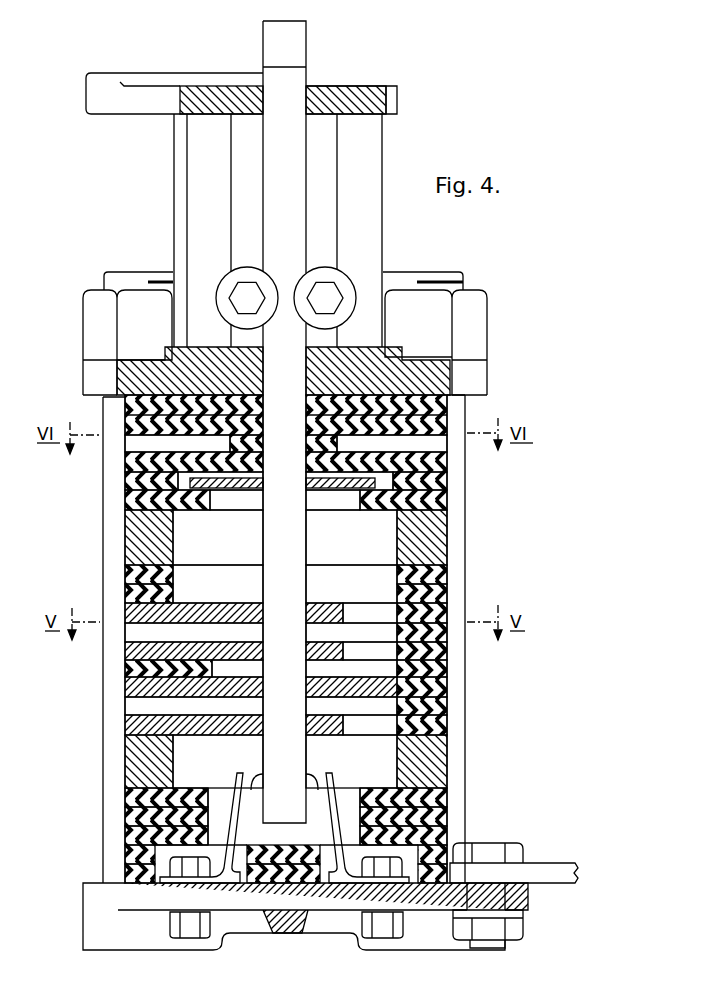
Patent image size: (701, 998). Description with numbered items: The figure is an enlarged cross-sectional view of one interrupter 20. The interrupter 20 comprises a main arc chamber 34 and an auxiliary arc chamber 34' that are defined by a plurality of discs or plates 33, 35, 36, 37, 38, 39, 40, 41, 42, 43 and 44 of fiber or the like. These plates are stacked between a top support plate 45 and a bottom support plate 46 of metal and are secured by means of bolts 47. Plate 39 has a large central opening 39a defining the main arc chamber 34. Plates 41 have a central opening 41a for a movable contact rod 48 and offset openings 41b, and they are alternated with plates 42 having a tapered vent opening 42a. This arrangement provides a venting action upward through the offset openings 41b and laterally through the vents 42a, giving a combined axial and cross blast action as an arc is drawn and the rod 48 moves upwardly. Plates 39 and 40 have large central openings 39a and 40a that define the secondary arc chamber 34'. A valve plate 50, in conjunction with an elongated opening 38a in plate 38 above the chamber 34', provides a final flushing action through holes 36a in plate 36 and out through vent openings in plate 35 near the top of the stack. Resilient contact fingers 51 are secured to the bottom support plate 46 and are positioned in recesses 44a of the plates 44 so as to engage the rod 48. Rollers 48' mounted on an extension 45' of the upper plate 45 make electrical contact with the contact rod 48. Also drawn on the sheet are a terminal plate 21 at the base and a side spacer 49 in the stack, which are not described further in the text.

The interrupter 20 is at (46, 668).
The terminal plate 21 is at (548, 866).
The plate 33 is at (450, 405).
The main arc chamber 34 is at (351, 761).
The auxiliary arc chamber 34' is at (351, 537).
The plate 35 is at (340, 443).
The plate 36 is at (125, 466).
The holes 36a is at (214, 456).
The plate 37 is at (450, 492).
The plate 38 is at (125, 502).
The elongated opening 38a is at (212, 511).
The plate 39 is at (450, 543).
The central opening 39a is at (178, 556).
The plate 40 is at (125, 580).
The central opening 40a is at (397, 587).
The plate 41 is at (125, 656).
The central opening 41a is at (258, 720).
The offset openings 41b is at (374, 722).
The plate 42 is at (397, 632).
The tapered vent opening 42a is at (211, 632).
The plate 43 is at (450, 663).
The plate 44 is at (125, 875).
The recesses 44a is at (316, 845).
The top support plate 45 is at (300, 342).
The extension 45' is at (241, 210).
The bottom support plate 46 is at (530, 900).
The bolts 47 is at (463, 272).
The movable contact rod 48 is at (290, 422).
The rollers 48' is at (286, 288).
The side spacer 49 is at (450, 615).
The valve plate 50 is at (342, 494).
The resilient contact fingers 51 is at (237, 778).